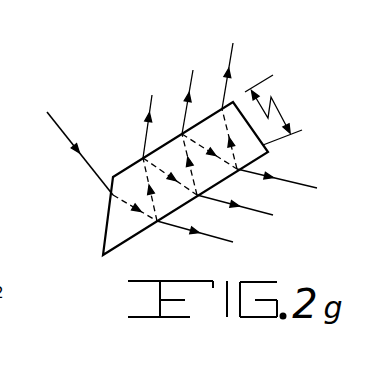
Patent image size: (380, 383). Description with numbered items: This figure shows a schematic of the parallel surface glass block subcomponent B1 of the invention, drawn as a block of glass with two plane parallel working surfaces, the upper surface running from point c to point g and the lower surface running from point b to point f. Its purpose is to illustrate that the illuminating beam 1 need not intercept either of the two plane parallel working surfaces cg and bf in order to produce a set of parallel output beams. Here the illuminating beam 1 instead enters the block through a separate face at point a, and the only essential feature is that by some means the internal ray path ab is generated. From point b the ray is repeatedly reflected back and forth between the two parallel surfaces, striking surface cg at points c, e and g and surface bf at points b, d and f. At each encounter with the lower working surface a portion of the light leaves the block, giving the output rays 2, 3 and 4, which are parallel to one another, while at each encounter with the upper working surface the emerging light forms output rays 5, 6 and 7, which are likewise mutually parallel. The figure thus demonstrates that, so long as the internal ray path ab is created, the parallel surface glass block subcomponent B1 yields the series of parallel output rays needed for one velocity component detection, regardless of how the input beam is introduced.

The illuminating beam 1 is at (80, 149).
The output ray 2 is at (205, 237).
The output ray 3 is at (242, 210).
The output ray 4 is at (283, 183).
The output ray 5 is at (149, 115).
The output ray 6 is at (192, 90).
The output ray 7 is at (234, 68).
The parallel surface glass block subcomponent B1 is at (120, 247).
The entry point of internal ray path a is at (126, 207).
The end point of internal ray path b is at (153, 201).
The end point of working surface c is at (161, 168).
The point on working surface d is at (191, 175).
The point on working surface e is at (203, 142).
The end point of working surface f is at (235, 149).
The end point of working surface g is at (210, 95).